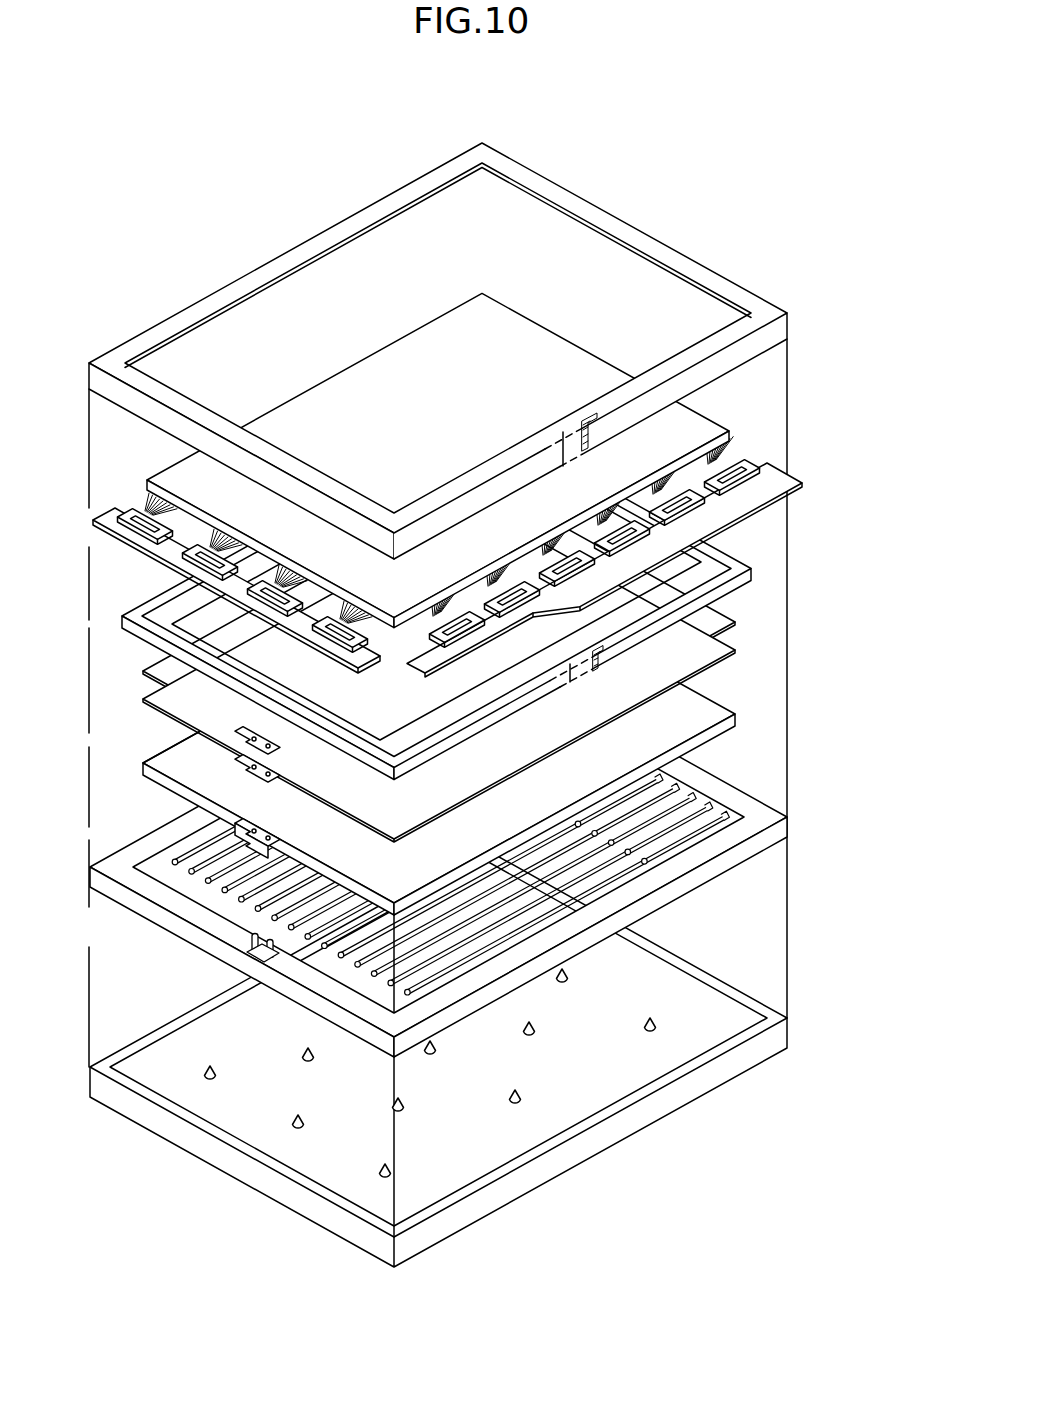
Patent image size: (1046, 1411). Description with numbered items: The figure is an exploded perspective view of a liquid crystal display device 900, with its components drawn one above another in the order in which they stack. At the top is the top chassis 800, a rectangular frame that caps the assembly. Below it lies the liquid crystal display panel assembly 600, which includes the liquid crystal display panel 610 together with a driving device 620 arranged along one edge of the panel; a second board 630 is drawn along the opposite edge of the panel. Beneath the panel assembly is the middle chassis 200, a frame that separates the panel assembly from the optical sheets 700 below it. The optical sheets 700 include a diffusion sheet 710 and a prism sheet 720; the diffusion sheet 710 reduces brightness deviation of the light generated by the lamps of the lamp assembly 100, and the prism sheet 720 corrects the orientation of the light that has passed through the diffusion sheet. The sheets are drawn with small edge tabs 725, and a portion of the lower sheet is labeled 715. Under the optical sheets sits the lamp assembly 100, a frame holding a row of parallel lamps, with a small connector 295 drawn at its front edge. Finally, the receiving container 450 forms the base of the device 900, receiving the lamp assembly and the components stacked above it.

The liquid crystal display device 900 is at (466, 682).
The top chassis 800 is at (766, 292).
The liquid crystal display panel assembly 600 is at (445, 469).
The liquid crystal display panel 610 is at (522, 318).
The driving device 620 is at (778, 481).
The printed circuit board 630 is at (108, 531).
The middle chassis 200 is at (760, 560).
The optical sheets 700 is at (445, 698).
The diffusion sheet 710 is at (688, 721).
The protrusion of diffusion plate 715 is at (193, 812).
The prism sheet 720 is at (742, 621).
The tabs 725 is at (250, 766).
The lamp assembly 100 is at (678, 842).
The connector 295 is at (248, 938).
The receiving container 450 is at (706, 1087).